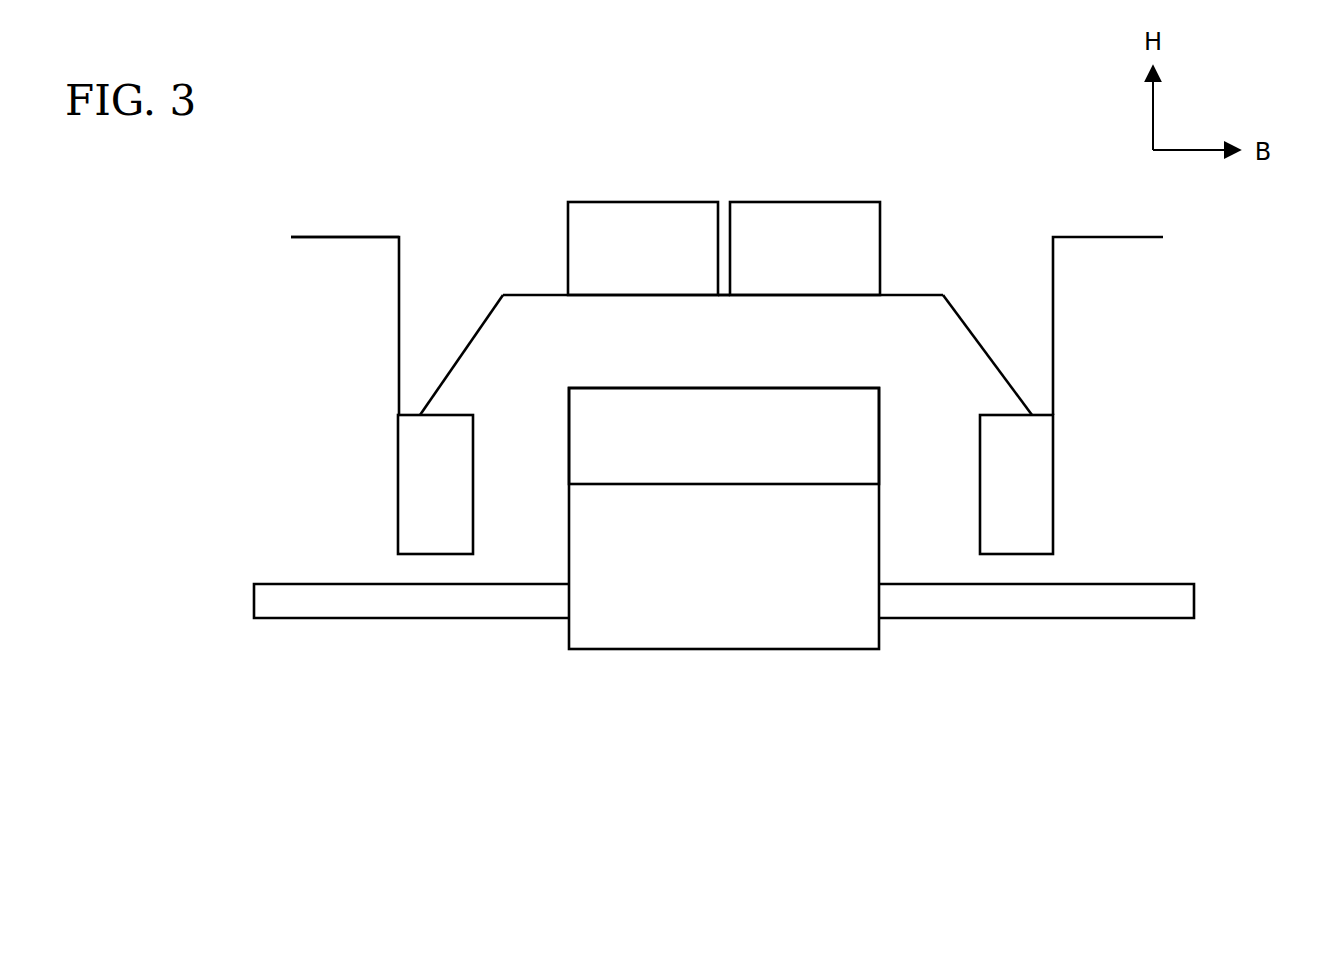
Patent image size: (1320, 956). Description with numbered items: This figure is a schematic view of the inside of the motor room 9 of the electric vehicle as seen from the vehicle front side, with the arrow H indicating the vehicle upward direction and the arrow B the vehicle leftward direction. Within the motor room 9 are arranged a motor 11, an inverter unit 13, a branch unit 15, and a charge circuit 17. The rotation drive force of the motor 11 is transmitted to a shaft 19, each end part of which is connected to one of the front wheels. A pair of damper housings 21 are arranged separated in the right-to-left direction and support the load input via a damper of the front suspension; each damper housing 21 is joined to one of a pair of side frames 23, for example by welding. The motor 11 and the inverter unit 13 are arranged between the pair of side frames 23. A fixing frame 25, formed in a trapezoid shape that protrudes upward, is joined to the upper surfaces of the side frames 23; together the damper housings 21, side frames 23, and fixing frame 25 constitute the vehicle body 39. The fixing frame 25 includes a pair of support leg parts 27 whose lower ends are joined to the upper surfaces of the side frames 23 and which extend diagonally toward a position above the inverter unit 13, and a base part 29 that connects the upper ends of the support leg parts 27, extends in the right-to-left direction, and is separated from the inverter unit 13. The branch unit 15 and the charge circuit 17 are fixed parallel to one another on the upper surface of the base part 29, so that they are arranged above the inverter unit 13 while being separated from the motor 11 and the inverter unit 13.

The motor room 9 is at (559, 176).
The motor 11 is at (797, 615).
The inverter unit 13 is at (800, 422).
The branch unit 15 is at (806, 222).
The charge circuit 17 is at (642, 222).
The shaft 19 is at (1083, 600).
The damper housing 21 is at (373, 237).
The side frame 23 is at (437, 530).
The fixing frame 25 is at (950, 287).
The support leg part 27 is at (473, 338).
The base part 29 is at (723, 297).
The vehicle body 39 is at (315, 234).